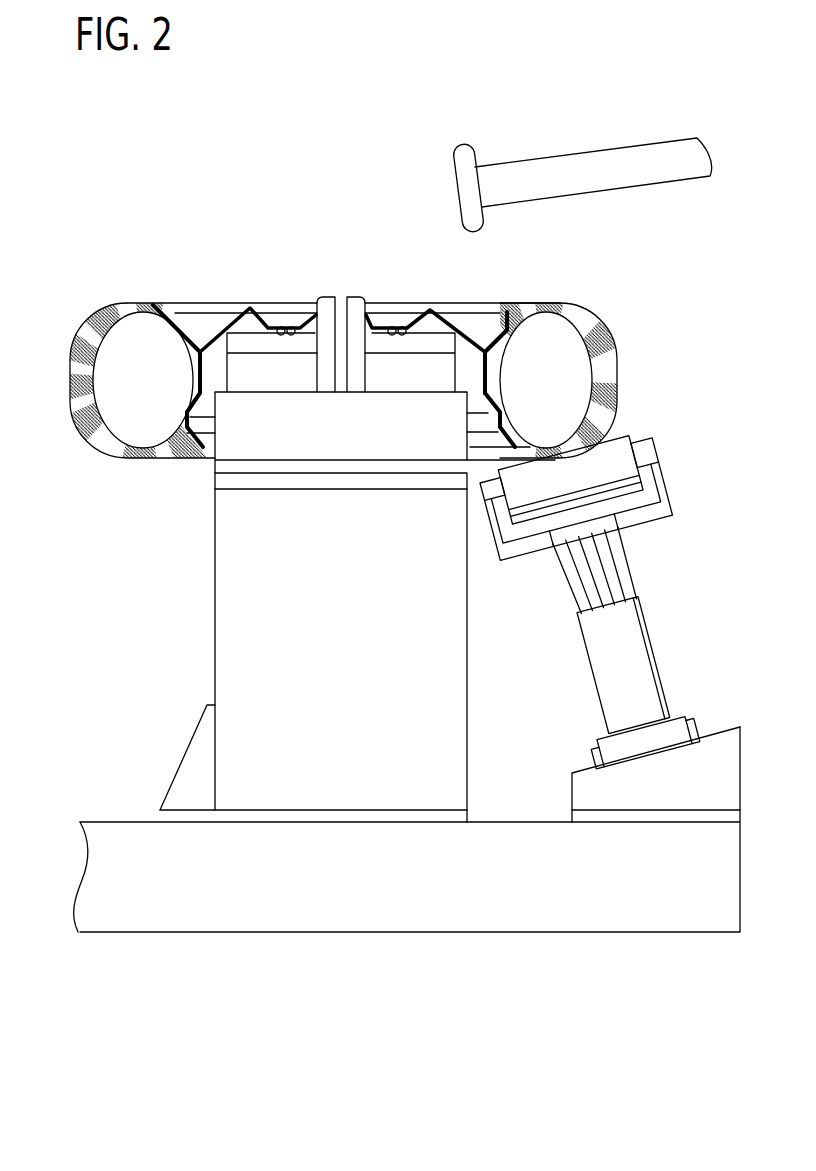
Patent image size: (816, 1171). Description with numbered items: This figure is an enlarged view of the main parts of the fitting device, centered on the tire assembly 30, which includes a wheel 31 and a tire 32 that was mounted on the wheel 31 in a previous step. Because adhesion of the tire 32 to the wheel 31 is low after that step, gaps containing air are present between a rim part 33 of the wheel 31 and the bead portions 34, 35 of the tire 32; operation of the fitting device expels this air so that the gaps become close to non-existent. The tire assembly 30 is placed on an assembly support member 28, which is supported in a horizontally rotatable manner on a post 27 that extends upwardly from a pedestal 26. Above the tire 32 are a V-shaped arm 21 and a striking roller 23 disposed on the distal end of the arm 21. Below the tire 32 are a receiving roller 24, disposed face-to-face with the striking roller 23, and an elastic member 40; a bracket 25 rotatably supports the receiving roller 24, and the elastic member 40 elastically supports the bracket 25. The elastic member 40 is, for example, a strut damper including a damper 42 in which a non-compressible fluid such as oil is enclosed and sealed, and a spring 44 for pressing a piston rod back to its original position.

The arm 21 is at (592, 160).
The striking roller 23 is at (467, 142).
The receiving roller 24 is at (633, 431).
The bracket 25 is at (668, 492).
The pedestal 26 is at (398, 912).
The post 27 is at (248, 620).
The assembly support member 28 is at (230, 438).
The tire assembly 30 is at (115, 286).
The wheel 31 is at (251, 306).
The tire 32 is at (601, 298).
The rim part 33 is at (499, 307).
The bead portion 34 is at (499, 329).
The bead portion 35 is at (508, 427).
The elastic member 40 is at (675, 683).
The damper 42 is at (657, 674).
The spring 44 is at (618, 565).